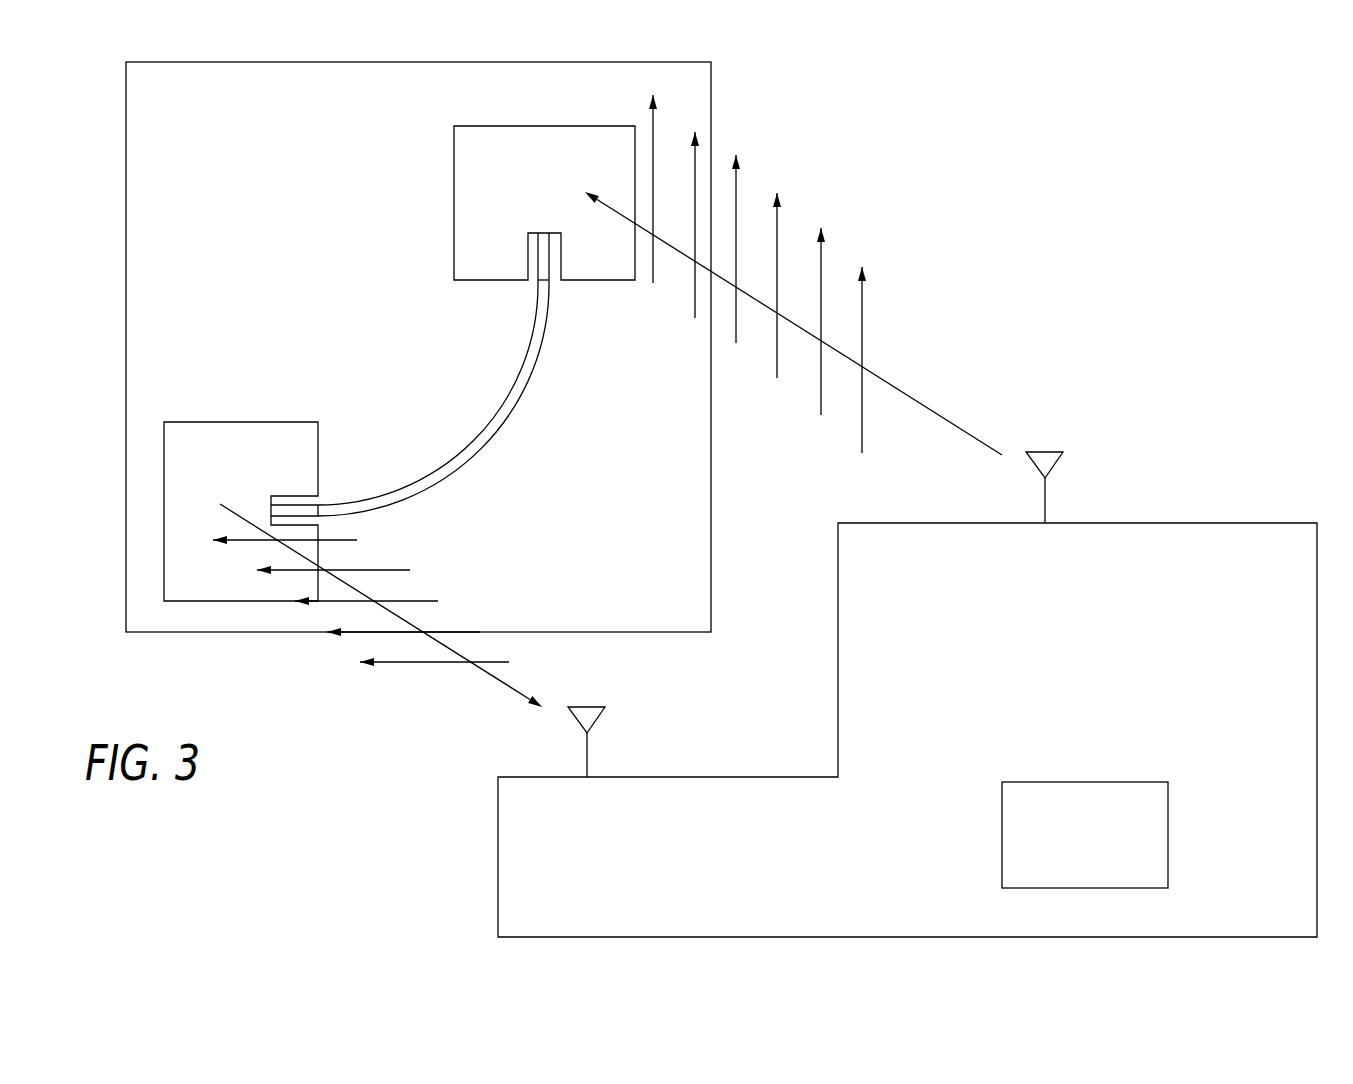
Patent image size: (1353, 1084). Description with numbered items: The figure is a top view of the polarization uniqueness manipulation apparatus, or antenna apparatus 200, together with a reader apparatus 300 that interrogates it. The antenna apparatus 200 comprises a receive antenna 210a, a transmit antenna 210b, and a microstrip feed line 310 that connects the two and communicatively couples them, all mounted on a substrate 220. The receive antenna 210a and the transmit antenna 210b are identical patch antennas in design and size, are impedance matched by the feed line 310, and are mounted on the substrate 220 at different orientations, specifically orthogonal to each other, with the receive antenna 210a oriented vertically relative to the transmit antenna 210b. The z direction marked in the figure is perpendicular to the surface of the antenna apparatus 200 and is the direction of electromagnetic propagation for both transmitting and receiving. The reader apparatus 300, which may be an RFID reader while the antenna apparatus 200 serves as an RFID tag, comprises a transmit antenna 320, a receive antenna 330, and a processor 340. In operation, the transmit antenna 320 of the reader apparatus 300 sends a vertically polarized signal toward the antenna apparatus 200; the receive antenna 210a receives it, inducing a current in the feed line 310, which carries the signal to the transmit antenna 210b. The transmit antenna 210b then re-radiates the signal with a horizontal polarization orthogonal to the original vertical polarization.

The antenna apparatus 200 is at (805, 95).
The substrate 220 is at (307, 240).
The receive antenna 210a is at (550, 182).
The transmit antenna 210b is at (265, 465).
The microstrip feed line 310 is at (487, 433).
The reader apparatus 300 is at (1196, 626).
The transmit antenna 320 is at (1055, 466).
The receive antenna 330 is at (596, 722).
The processor 340 is at (1100, 861).